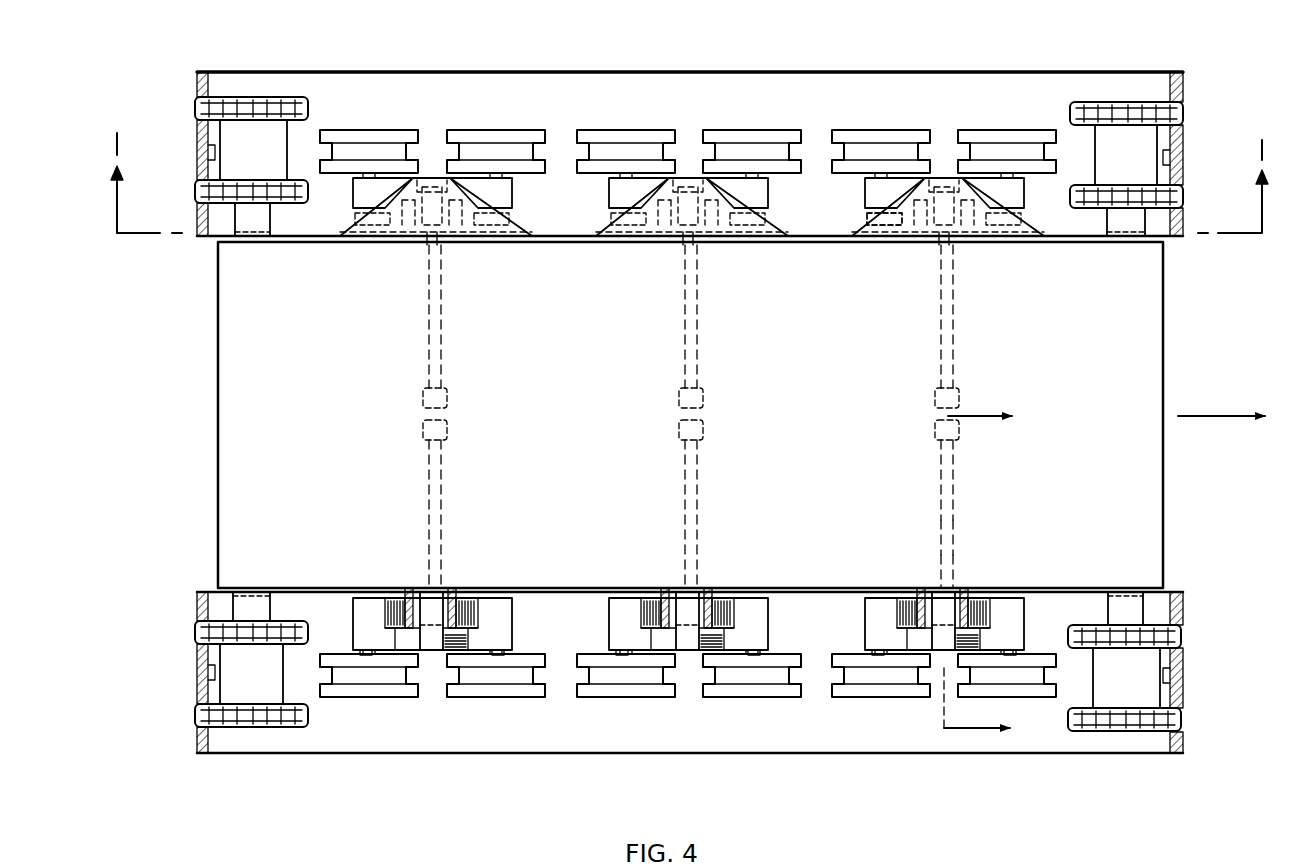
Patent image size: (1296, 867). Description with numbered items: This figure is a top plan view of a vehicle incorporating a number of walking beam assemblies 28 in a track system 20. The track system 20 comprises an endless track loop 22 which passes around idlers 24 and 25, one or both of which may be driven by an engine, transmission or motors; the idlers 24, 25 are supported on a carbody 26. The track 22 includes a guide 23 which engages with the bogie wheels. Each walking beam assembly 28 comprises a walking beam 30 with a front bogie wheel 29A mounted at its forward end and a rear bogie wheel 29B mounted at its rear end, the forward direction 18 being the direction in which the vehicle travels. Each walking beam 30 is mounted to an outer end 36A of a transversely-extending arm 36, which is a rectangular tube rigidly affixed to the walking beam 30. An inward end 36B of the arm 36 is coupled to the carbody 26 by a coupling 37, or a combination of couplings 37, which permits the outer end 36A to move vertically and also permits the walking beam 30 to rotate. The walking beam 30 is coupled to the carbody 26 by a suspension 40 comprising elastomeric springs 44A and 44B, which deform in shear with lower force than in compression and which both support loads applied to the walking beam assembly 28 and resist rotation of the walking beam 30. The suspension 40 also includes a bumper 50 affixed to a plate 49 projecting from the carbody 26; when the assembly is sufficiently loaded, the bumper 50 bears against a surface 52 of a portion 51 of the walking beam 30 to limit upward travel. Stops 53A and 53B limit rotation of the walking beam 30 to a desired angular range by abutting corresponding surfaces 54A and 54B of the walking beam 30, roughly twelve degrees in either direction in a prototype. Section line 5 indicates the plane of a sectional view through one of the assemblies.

The direction 18 is at (1212, 410).
The track system 20 is at (530, 55).
The endless track loop 22 is at (755, 70).
The guide 23 is at (232, 660).
The idler 24 is at (1140, 98).
The idler 25 is at (256, 94).
The carbody 26 is at (1168, 305).
The walking beam assembly 28 is at (704, 414).
The front bogie wheel 29A is at (1000, 130).
The rear bogie wheel 29B is at (862, 130).
The walking beam 30 is at (689, 416).
The transversely-extending arm 36 is at (697, 416).
The outer end 36A is at (950, 583).
The inward end 36B is at (954, 448).
The coupling 37 is at (421, 395).
The suspension 40 is at (458, 593).
The elastomeric spring 44A is at (502, 580).
The elastomeric spring 44B is at (367, 580).
The plate 49 is at (651, 230).
The bumper 50 is at (811, 255).
The portion 51 is at (659, 588).
The surface 52 is at (815, 594).
The stop 53A is at (1044, 248).
The stop 53B is at (864, 258).
The surface 54A is at (1043, 592).
The surface 54B is at (853, 587).
The section line 5- 5 is at (991, 573).